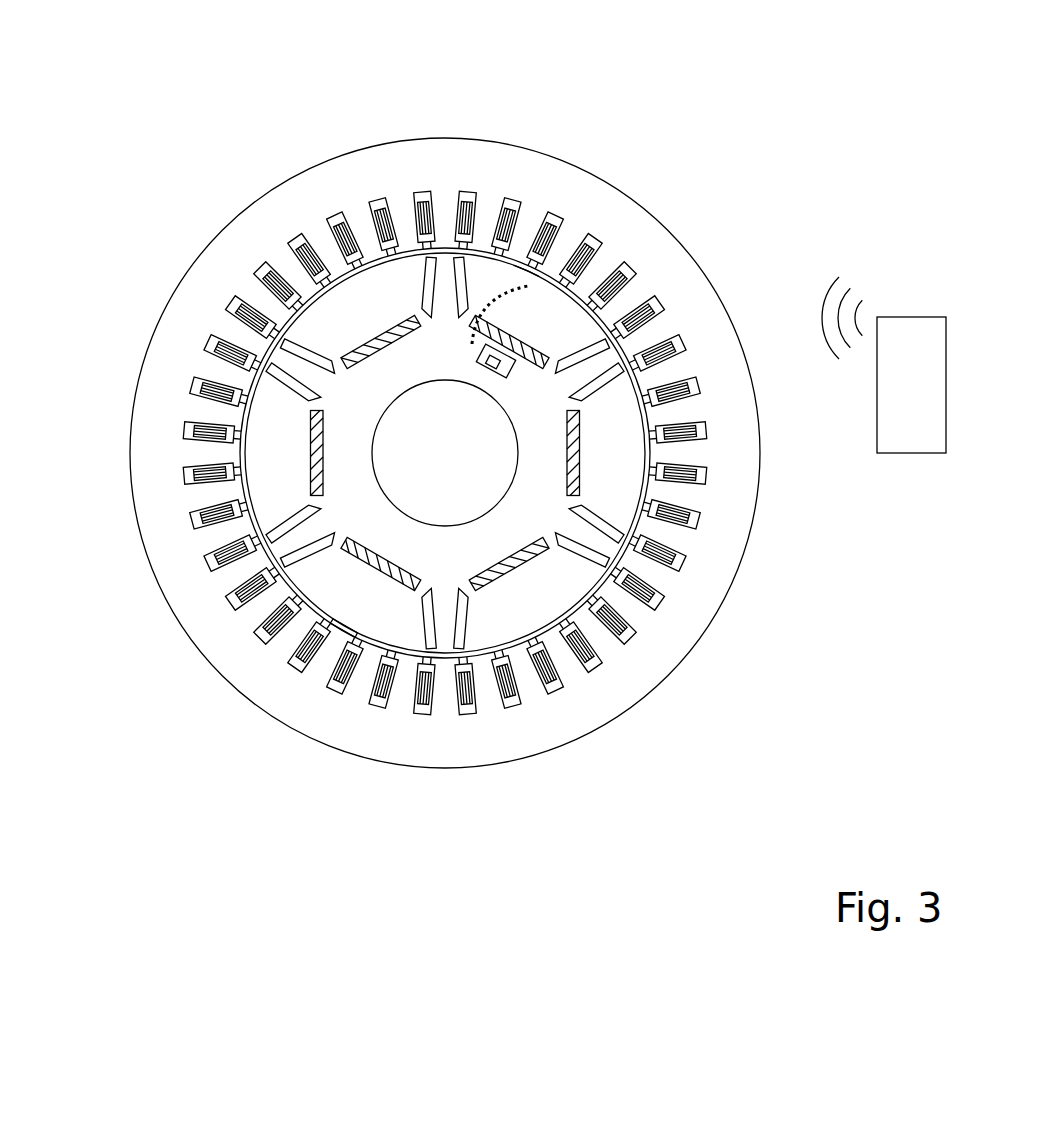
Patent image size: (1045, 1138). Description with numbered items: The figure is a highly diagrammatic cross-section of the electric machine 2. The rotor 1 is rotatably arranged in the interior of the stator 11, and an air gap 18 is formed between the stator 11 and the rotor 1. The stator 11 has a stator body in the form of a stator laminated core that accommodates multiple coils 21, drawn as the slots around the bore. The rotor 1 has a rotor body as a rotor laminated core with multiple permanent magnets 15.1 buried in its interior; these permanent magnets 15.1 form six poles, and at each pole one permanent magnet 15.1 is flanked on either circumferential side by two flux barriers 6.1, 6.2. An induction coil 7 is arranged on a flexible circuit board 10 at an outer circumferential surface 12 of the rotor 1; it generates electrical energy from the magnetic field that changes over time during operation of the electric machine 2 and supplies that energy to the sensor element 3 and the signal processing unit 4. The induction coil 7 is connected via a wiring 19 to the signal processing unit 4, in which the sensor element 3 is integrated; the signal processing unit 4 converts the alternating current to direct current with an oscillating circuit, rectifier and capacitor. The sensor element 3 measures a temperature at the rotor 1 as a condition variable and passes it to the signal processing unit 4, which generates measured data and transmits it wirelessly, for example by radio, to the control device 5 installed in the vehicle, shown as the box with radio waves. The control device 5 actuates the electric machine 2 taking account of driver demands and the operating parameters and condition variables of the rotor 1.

The rotor 1 is at (328, 584).
The electric machine 2 is at (177, 222).
The sensor element 3 is at (495, 363).
The signal processing unit 4 is at (503, 377).
The control device 5 is at (910, 343).
The flux barrier 6.1 is at (463, 282).
The flux barrier 6.2 is at (590, 352).
The induction coil 7 is at (584, 144).
The flexible circuit board 10 is at (533, 275).
The stator 11 is at (525, 140).
The outer circumferential surface 12 is at (355, 626).
The permanent magnet 15.1 is at (540, 347).
The air gap 18 is at (346, 277).
The wiring 19 is at (470, 343).
The coil 21 is at (213, 340).